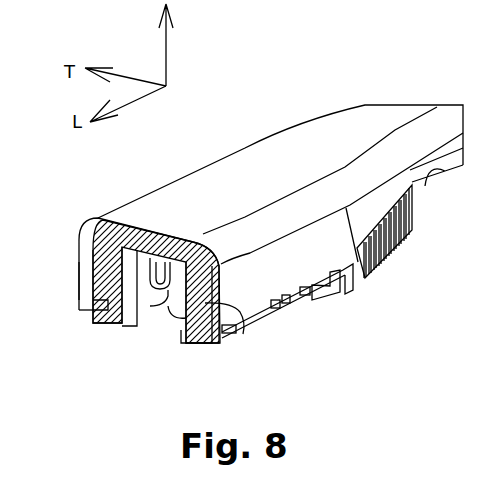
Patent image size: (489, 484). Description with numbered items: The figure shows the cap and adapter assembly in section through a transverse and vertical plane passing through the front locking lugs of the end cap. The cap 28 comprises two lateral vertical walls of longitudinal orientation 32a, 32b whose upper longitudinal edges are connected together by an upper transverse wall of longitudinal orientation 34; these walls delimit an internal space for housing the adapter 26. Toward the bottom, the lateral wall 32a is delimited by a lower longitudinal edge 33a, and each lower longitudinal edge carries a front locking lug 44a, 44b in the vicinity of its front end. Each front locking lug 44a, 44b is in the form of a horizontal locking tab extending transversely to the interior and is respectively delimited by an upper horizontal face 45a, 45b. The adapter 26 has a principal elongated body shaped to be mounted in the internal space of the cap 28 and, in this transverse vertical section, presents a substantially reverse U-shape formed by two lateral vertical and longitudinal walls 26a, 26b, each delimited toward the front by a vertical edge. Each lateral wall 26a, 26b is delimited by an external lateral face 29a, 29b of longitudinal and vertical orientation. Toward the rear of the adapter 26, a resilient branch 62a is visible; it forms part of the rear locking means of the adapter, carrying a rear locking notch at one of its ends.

The cap 28 is at (405, 100).
The adapter 26 is at (266, 314).
The lateral vertical and longitudinal wall 26a is at (186, 240).
The lateral vertical and longitudinal wall 26b is at (110, 262).
The external lateral face 29a is at (236, 332).
The external lateral face 29b is at (80, 252).
The lateral vertical wall 32a is at (251, 246).
The lateral vertical wall 32b is at (80, 280).
The lower longitudinal edge 33a is at (287, 305).
The upper transverse wall 34 is at (138, 232).
The front locking lug 44a is at (200, 343).
The front locking lug 44b is at (100, 378).
The upper horizontal face 45a is at (181, 314).
The upper horizontal face 45b is at (92, 295).
The resilient branch 62a is at (400, 247).